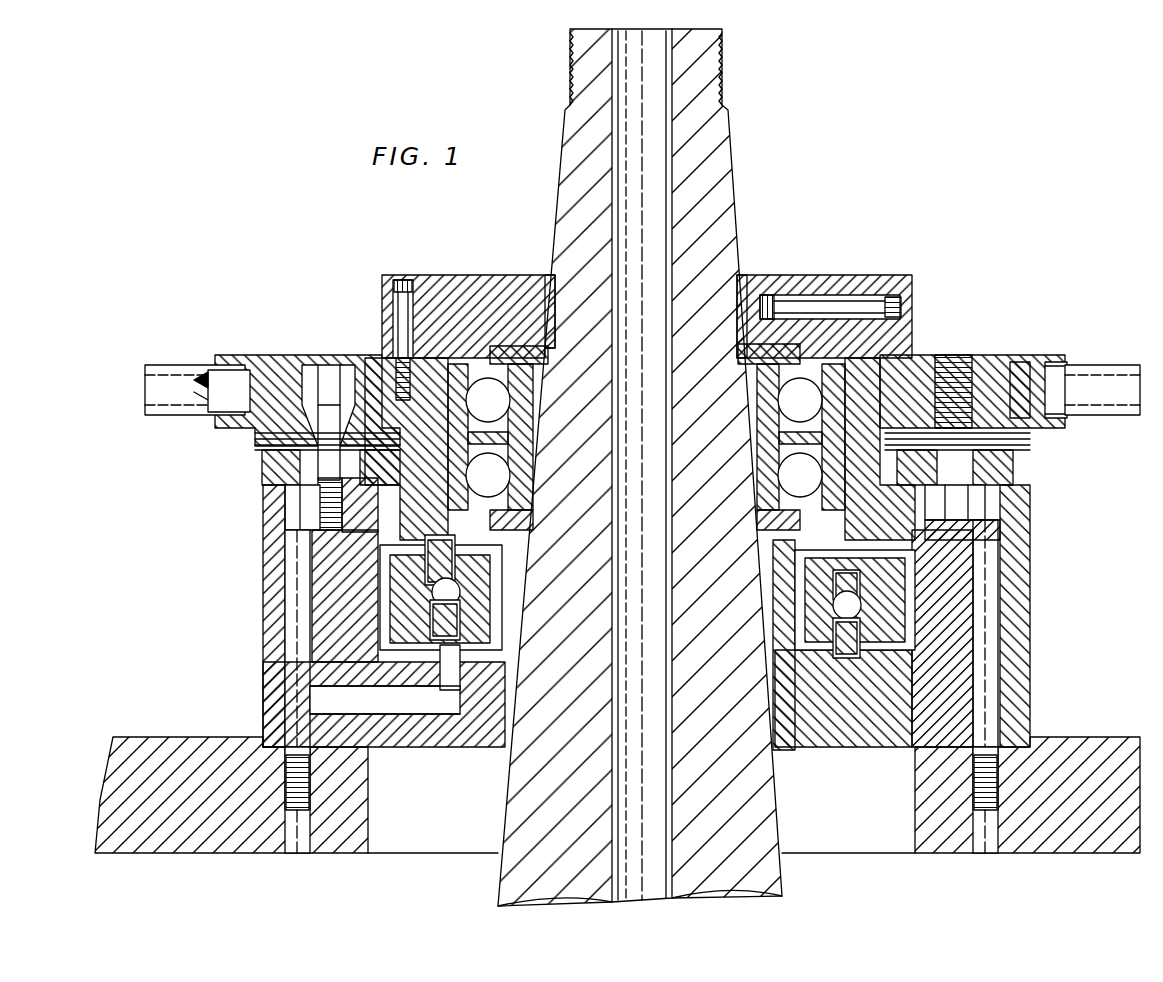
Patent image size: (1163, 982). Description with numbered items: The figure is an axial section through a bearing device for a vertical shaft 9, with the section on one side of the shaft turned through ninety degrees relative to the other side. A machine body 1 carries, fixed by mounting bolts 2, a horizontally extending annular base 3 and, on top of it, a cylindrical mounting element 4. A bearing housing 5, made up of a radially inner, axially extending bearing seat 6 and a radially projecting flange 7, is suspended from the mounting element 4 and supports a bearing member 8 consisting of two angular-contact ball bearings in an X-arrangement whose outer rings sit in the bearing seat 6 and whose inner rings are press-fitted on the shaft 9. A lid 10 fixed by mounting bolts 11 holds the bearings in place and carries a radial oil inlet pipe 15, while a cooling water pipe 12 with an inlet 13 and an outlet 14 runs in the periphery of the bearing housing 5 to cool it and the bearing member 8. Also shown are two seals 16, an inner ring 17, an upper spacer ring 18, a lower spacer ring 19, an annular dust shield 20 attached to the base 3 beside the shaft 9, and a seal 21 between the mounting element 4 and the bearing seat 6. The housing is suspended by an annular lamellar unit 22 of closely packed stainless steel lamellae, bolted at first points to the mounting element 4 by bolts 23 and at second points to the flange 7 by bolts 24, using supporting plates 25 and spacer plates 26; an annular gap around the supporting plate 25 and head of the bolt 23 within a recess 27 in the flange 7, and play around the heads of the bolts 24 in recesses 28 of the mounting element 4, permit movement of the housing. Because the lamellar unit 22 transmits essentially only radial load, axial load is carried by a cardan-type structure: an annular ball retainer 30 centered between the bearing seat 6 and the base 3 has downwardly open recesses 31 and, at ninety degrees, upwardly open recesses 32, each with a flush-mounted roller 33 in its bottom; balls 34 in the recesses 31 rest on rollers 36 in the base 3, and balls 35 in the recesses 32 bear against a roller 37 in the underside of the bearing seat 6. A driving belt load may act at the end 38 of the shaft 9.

The machine body 1 is at (172, 730).
The mounting bolts 2 is at (265, 600).
The annular base 3 is at (262, 722).
The mounting element 4 is at (262, 512).
The bearing housing 5 is at (270, 342).
The bearing seat 6 is at (405, 500).
The flange 7 is at (222, 425).
The bearing member 8 is at (755, 455).
The vertical shaft 9 is at (738, 190).
The lid 10 is at (470, 275).
The mounting bolts 11 is at (403, 278).
The cooling water pipe 12 is at (1050, 355).
The inlet 13 is at (1100, 362).
The outlet 14 is at (160, 352).
The radial oil inlet pipe 15 is at (903, 307).
The seals 16 is at (752, 272).
The inner ring 17 is at (548, 272).
The upper spacer ring 18 is at (790, 295).
The lower spacer ring 19 is at (533, 520).
The annular dust shield 20 is at (772, 628).
The seal 21 is at (1005, 540).
The lamellar unit 22 is at (262, 440).
The bolts 23 is at (330, 365).
The bolts 24 is at (950, 352).
The supporting plates 25 is at (226, 353).
The spacer plates 26 is at (268, 482).
The recess 27 is at (348, 368).
The recesses 28 is at (1005, 510).
The annular ball retainer 30 is at (295, 632).
The recesses 31 is at (860, 650).
The recesses 32 is at (505, 560).
The roller 33 is at (448, 660).
The balls 34 is at (826, 600).
The balls 35 is at (312, 580).
The rollers 36 is at (847, 640).
The roller 37 is at (275, 556).
The end of the shaft 38 is at (728, 74).